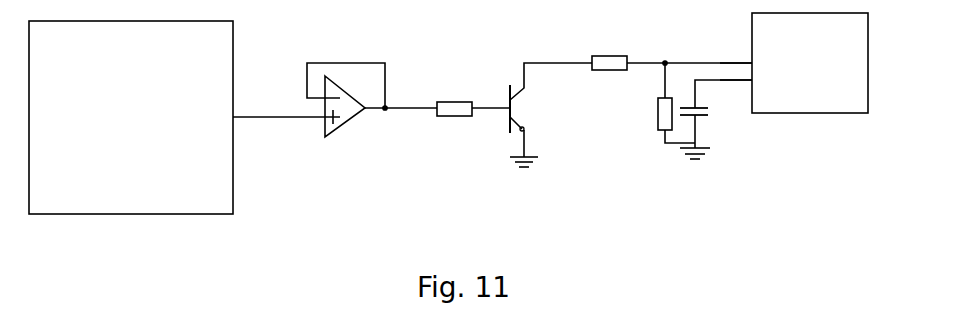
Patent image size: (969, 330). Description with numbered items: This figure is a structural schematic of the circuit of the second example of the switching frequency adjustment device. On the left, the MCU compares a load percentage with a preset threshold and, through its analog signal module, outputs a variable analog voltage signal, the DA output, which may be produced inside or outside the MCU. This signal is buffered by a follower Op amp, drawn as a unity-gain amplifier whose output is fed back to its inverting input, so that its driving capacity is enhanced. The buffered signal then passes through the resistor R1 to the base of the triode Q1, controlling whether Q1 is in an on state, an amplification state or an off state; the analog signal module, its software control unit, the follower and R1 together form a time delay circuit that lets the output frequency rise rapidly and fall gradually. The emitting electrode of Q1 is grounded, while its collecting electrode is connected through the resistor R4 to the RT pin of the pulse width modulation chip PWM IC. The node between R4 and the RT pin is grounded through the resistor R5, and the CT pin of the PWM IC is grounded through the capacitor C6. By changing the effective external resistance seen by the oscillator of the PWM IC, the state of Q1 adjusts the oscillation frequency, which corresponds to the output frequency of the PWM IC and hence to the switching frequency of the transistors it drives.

The element MCU is at (131, 117).
The DA output DA is at (286, 101).
The follower Op amp is at (368, 115).
The resistor R1 is at (471, 92).
The triode Q1 is at (551, 115).
The resistor R4 is at (672, 45).
The resistor R5 is at (659, 103).
The capacitor C6 is at (716, 119).
The RT pin RT is at (733, 51).
The CT pin CT is at (733, 92).
The pulse width modulation chip PWM IC is at (810, 63).